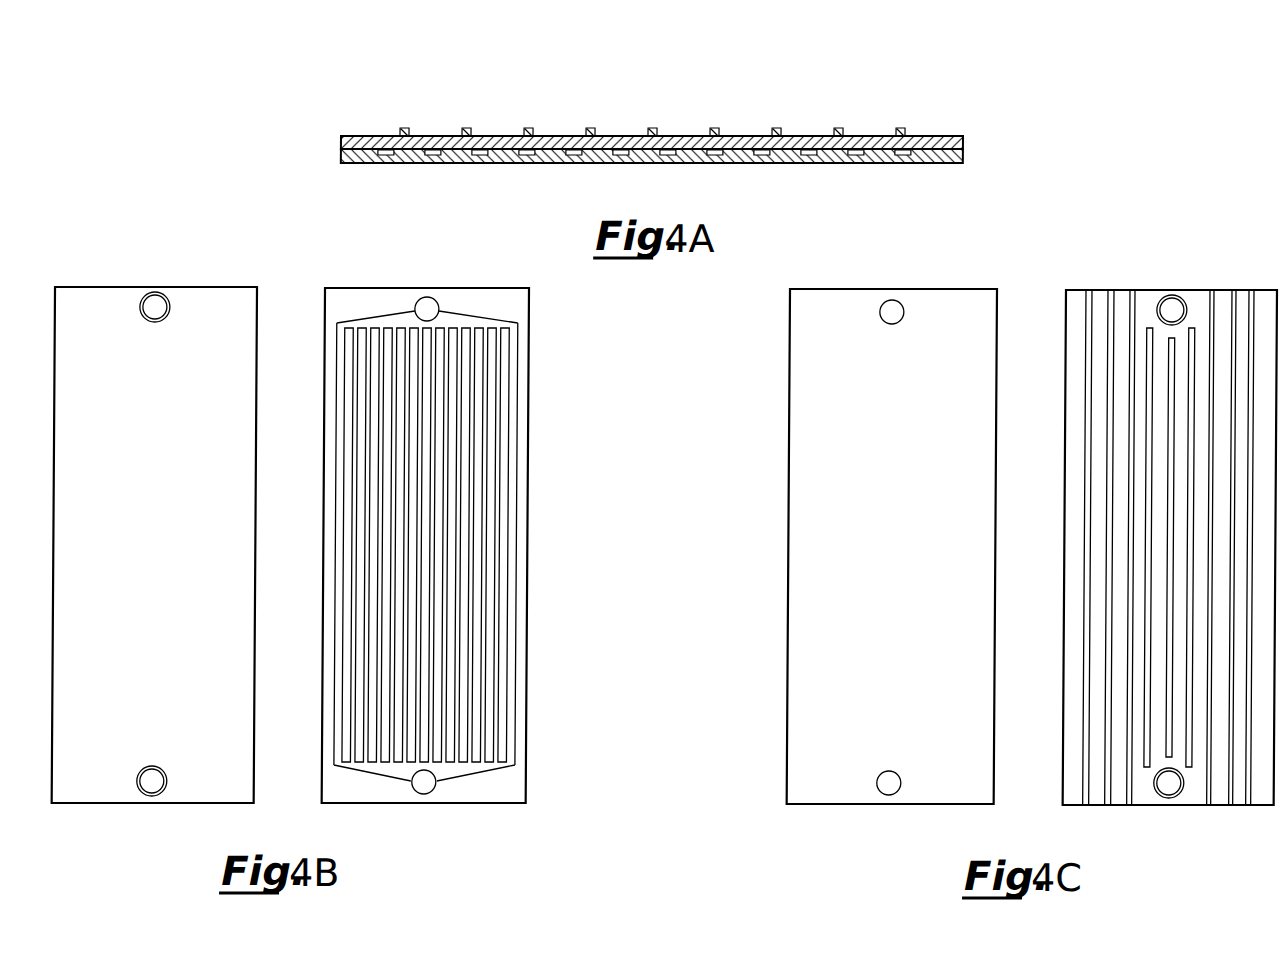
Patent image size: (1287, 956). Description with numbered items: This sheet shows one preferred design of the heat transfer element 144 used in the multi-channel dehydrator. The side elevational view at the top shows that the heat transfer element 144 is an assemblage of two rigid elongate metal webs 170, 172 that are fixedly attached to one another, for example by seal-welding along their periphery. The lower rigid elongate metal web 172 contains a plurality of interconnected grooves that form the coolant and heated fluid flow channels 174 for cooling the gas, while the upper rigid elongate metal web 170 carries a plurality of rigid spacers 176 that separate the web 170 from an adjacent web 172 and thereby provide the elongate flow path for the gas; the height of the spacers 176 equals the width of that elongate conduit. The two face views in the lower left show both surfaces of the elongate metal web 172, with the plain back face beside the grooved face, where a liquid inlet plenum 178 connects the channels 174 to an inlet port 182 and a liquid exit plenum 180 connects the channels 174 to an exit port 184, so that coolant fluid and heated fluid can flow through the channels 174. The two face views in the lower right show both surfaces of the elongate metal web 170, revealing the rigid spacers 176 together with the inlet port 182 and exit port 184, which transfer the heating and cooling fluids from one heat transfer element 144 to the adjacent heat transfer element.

In FIG. 4A, the heat transfer element 144 is at (700, 127).
In FIG. 4A, the upper rigid elongate metal web 170 is at (962, 138).
In FIG. 4C, the upper rigid elongate metal web 170 is at (976, 289).
In FIG. 4A, the lower rigid elongate metal web 172 is at (962, 160).
In FIG. 4B, the lower rigid elongate metal web 172 is at (205, 287).
In FIG. 4A, the channels 174 is at (898, 157).
In FIG. 4B, the channels 174 is at (384, 333).
In FIG. 4A, the rigid spacers 176 is at (900, 128).
In FIG. 4C, the rigid spacers 176 is at (1250, 293).
In FIG. 4B, the liquid inlet plenum 178 is at (478, 322).
In FIG. 4B, the liquid exit plenum 180 is at (474, 770).
In FIG. 4B, the inlet port 182 is at (429, 304).
In FIG. 4C, the inlet port 182 is at (893, 300).
In FIG. 4B, the exit port 184 is at (427, 794).
In FIG. 4C, the exit port 184 is at (890, 791).